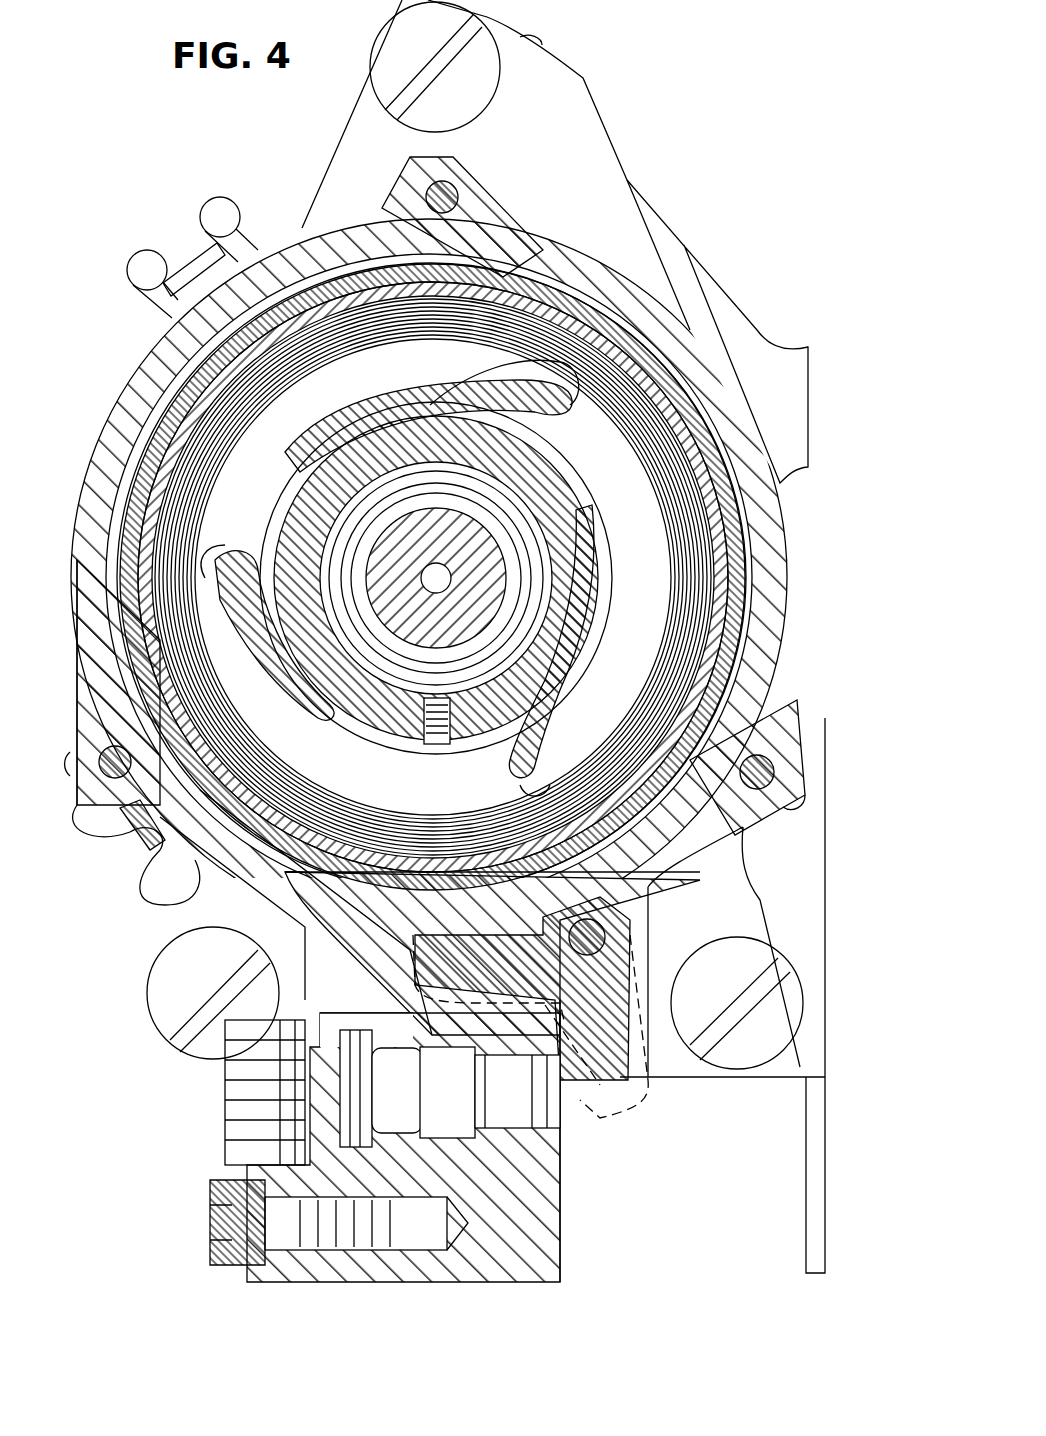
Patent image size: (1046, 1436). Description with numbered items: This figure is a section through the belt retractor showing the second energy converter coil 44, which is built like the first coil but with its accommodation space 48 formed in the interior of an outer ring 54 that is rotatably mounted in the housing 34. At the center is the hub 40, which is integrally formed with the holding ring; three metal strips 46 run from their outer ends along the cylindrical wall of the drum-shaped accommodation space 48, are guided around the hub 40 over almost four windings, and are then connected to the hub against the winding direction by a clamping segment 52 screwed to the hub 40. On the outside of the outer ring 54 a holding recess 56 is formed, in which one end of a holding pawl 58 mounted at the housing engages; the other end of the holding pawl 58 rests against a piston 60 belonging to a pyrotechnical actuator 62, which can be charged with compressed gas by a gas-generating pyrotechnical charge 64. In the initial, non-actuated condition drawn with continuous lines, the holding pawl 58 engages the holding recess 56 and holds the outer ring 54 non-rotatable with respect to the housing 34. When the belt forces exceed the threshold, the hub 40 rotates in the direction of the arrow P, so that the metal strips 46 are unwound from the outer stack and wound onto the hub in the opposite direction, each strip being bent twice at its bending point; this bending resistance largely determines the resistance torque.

The housing 34 is at (720, 370).
The hub 40 is at (535, 472).
The second energy converter coil 44 is at (355, 372).
The metal strips 46 is at (520, 300).
The accommodation space 48 is at (360, 783).
The clamping segment 52 is at (420, 406).
The outer ring 54 is at (720, 455).
The holding recess 56 is at (600, 885).
The holding pawl 58 is at (620, 1085).
The piston 60 is at (540, 1105).
The pyrotechnical actuator 62 is at (522, 1130).
The gas-generating pyrotechnical charge 64 is at (330, 1100).
The arrow P is at (243, 515).